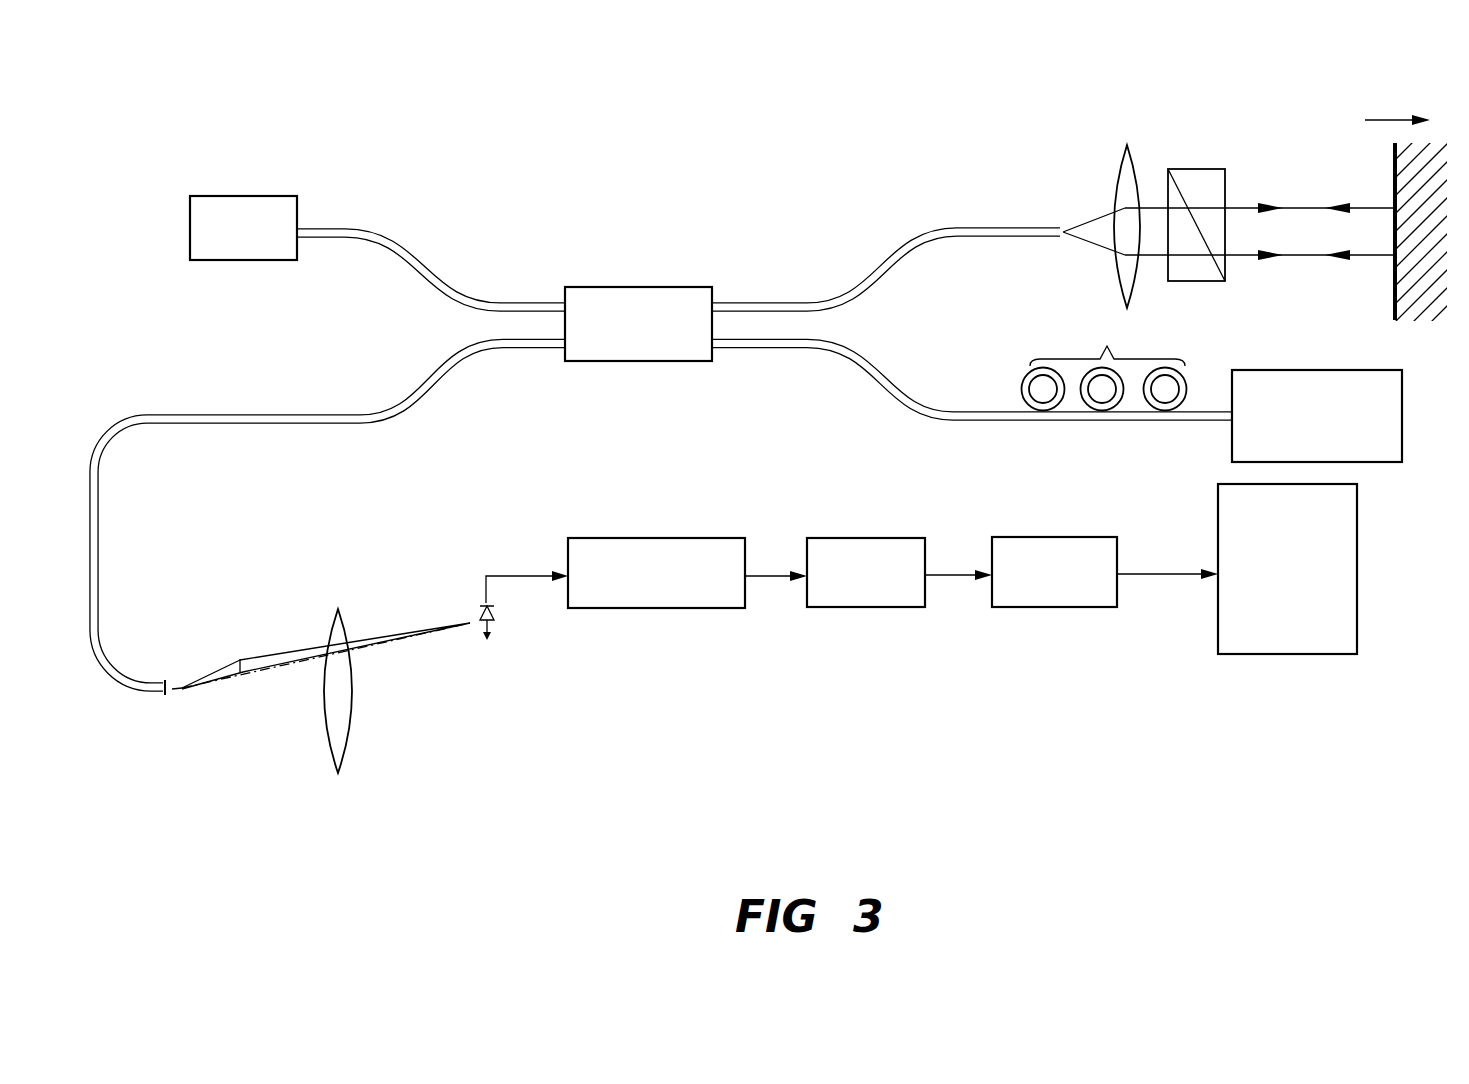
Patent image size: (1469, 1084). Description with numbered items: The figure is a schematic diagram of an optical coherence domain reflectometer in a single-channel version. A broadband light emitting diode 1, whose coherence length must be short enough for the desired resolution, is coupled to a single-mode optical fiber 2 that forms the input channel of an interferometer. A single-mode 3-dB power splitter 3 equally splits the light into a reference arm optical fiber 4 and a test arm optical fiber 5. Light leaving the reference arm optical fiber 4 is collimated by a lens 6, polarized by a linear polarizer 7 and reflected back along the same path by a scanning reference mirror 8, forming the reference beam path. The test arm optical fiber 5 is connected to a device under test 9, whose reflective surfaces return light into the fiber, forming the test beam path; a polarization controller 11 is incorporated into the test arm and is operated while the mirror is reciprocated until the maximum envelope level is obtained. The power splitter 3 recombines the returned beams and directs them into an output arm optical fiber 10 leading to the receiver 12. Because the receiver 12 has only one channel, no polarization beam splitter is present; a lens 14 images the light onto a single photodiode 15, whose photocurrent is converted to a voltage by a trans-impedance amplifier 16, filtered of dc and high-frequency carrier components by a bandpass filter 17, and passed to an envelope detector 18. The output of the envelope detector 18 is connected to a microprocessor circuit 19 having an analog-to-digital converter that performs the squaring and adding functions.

The light emitting diode 1 is at (287, 196).
The single-mode optical fiber 2 is at (400, 250).
The 3-dB power splitter 3 is at (665, 287).
The reference arm optical fiber 4 is at (957, 229).
The test arm optical fiber 5 is at (935, 403).
The lens 6 is at (1118, 180).
The linear polarizer 7 is at (1200, 169).
The scanning reference mirror 8 is at (1383, 173).
The device under test 9 is at (1405, 395).
The output arm optical fiber 10 is at (420, 378).
The polarization controller 11 is at (1085, 330).
The receiver 12 is at (297, 806).
The lens 14 is at (330, 625).
The photodiode 15 is at (505, 616).
The trans-impedance amplifier 16 is at (660, 538).
The bandpass filter 17 is at (874, 538).
The envelope detector 18 is at (1050, 537).
The microprocessor circuit 19 is at (1258, 657).